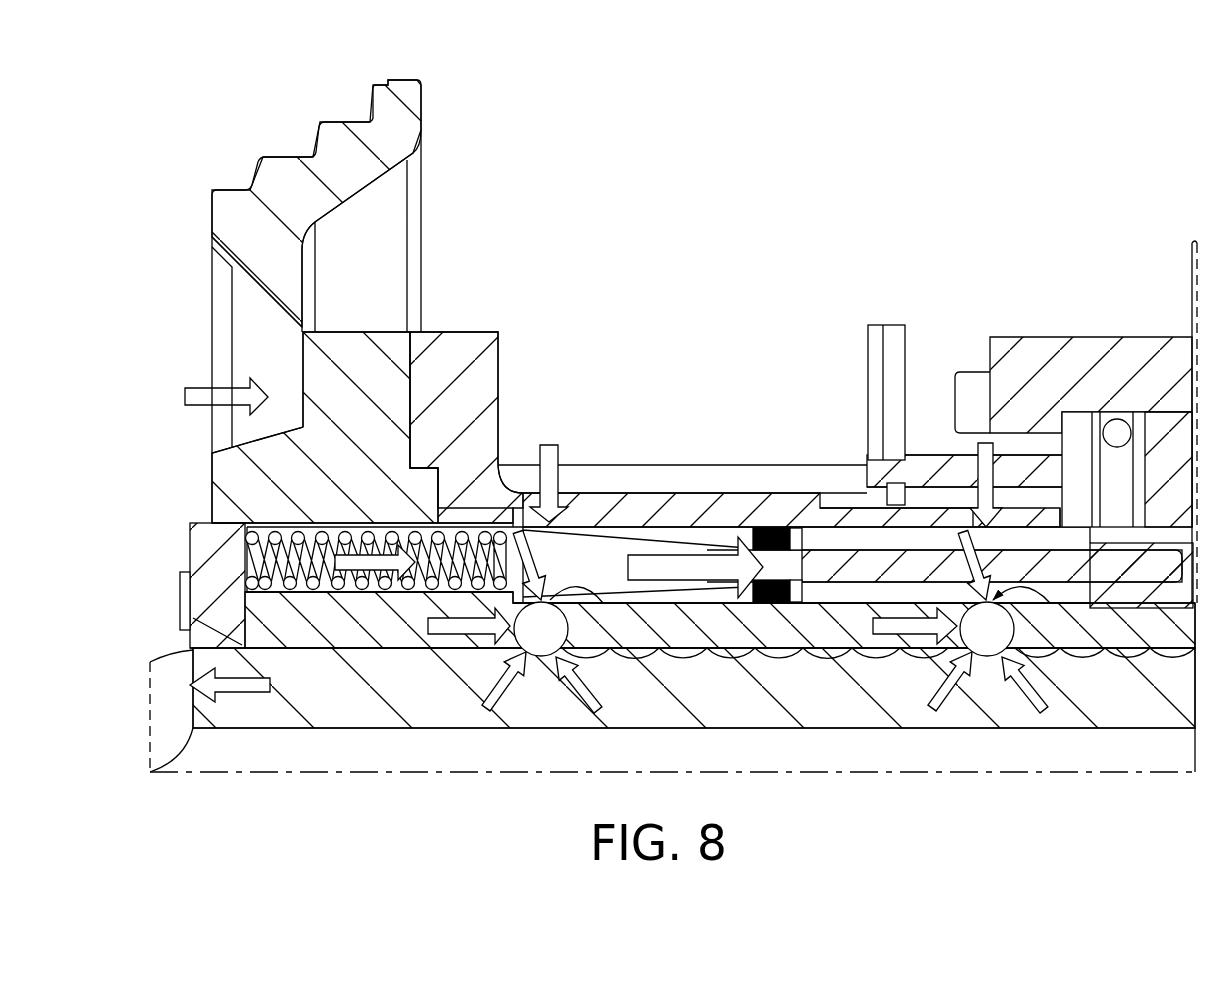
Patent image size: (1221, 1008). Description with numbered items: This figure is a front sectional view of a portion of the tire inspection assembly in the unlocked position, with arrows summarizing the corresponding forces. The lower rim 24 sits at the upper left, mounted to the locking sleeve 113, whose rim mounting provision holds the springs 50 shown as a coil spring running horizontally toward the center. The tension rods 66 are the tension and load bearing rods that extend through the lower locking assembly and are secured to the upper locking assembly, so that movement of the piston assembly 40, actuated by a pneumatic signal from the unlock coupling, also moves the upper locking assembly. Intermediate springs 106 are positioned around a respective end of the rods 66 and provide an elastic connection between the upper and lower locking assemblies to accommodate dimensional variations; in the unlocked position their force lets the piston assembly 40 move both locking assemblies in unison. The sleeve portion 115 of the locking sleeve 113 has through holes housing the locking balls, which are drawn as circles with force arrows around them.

The lower rim 24 is at (232, 182).
The locking sleeve 113 is at (363, 395).
The piston assembly 40 is at (1078, 428).
The springs 50 is at (333, 560).
The tension rods 66 is at (852, 548).
The intermediate springs 106 is at (772, 528).
The sleeve portion 115 is at (460, 637).